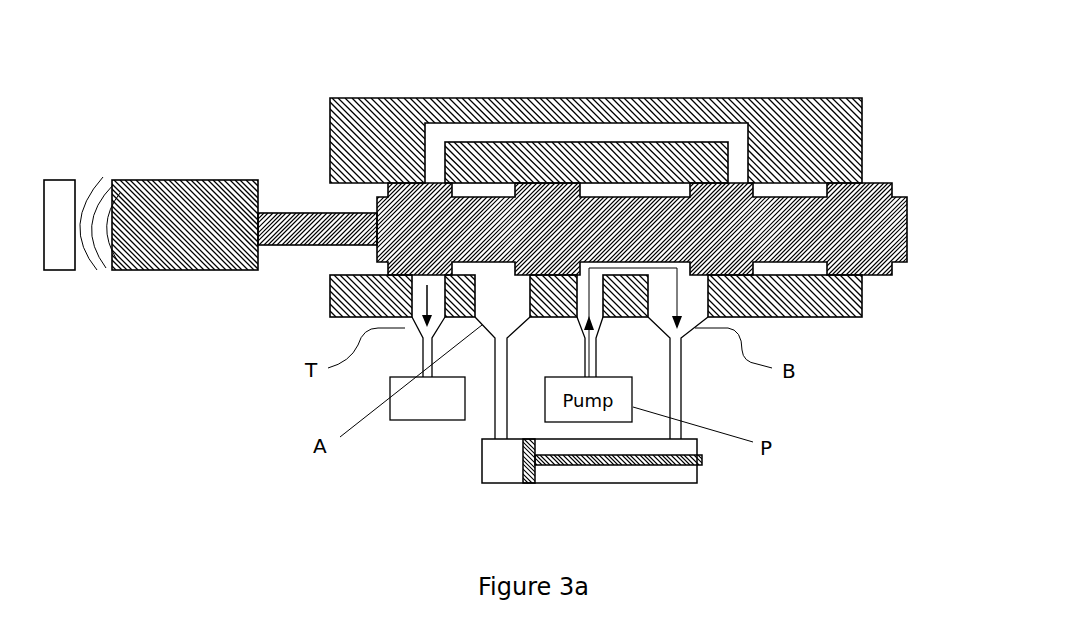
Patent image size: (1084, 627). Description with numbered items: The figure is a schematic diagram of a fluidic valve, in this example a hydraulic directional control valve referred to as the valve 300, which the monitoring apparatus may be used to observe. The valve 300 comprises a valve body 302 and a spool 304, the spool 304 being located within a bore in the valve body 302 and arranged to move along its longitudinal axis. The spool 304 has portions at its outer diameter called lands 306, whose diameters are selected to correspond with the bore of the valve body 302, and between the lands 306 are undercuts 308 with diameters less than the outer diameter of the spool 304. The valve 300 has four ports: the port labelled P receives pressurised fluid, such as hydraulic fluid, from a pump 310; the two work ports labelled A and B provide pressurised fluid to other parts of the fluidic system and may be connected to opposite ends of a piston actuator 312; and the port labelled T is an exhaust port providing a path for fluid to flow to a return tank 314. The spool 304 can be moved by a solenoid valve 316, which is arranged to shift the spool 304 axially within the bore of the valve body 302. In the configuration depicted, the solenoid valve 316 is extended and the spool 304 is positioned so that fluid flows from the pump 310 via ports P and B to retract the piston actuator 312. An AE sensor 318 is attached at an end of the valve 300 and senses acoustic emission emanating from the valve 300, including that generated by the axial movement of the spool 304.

The valve 300 is at (226, 102).
The valve body 302 is at (837, 157).
The spool 304 is at (910, 210).
The lands 306 is at (688, 182).
The undercuts 308 is at (627, 196).
The pump 310 is at (607, 327).
The piston actuator 312 is at (478, 460).
The return tank 314 is at (413, 422).
The solenoid valve 316 is at (175, 275).
The AE sensor 318 is at (62, 180).